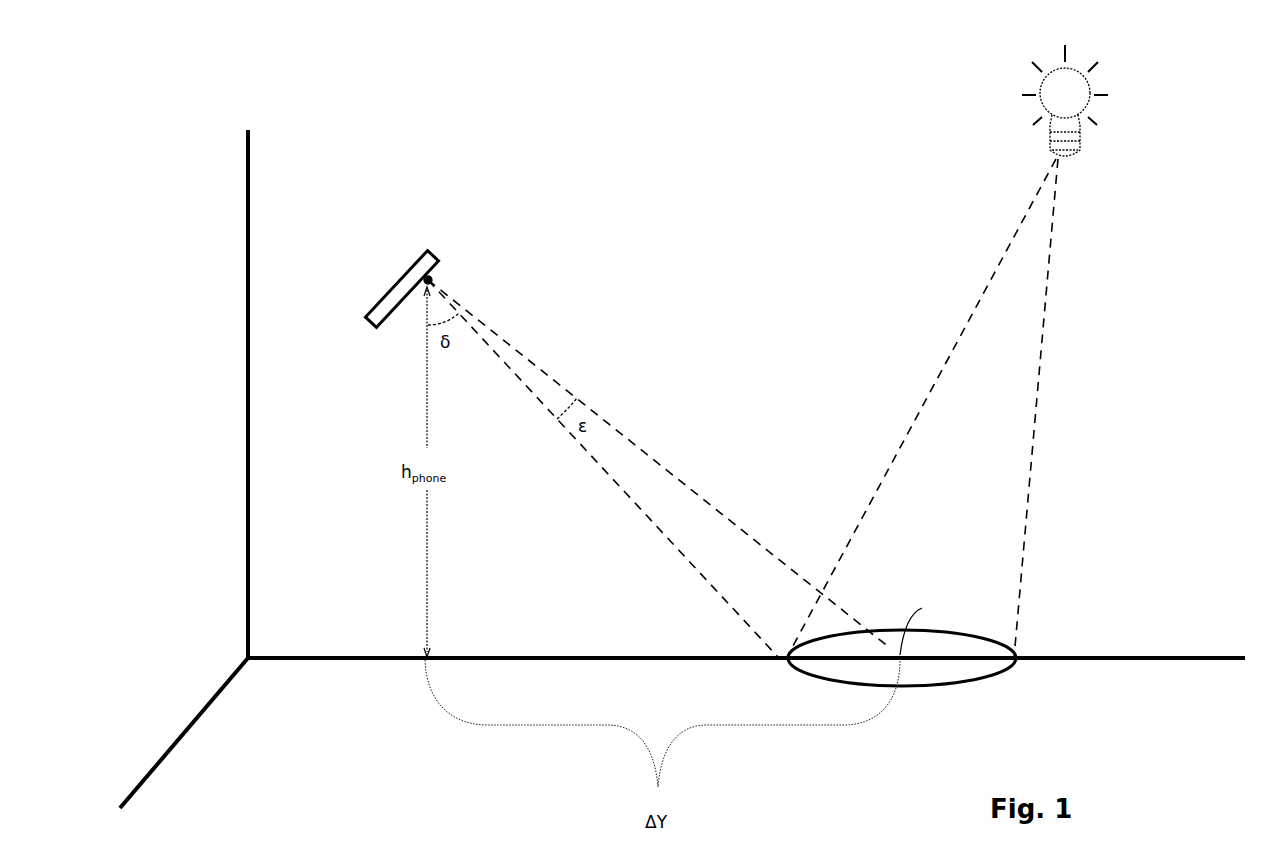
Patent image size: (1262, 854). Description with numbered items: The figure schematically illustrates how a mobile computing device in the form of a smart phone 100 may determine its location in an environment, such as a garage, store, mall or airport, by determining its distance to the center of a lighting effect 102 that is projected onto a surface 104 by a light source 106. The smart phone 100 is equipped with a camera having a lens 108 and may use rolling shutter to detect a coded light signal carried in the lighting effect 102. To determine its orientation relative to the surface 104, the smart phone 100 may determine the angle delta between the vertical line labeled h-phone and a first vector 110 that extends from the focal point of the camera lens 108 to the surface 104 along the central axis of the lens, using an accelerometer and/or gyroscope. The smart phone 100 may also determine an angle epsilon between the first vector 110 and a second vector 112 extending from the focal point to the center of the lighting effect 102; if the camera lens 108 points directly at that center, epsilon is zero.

The smart phone 100 is at (398, 279).
The lighting effect 102 is at (1016, 650).
The surface 104 is at (669, 469).
The light source 106 is at (1045, 84).
The camera lens 108 is at (437, 278).
The first vector 110 is at (662, 530).
The second vector 112 is at (668, 472).